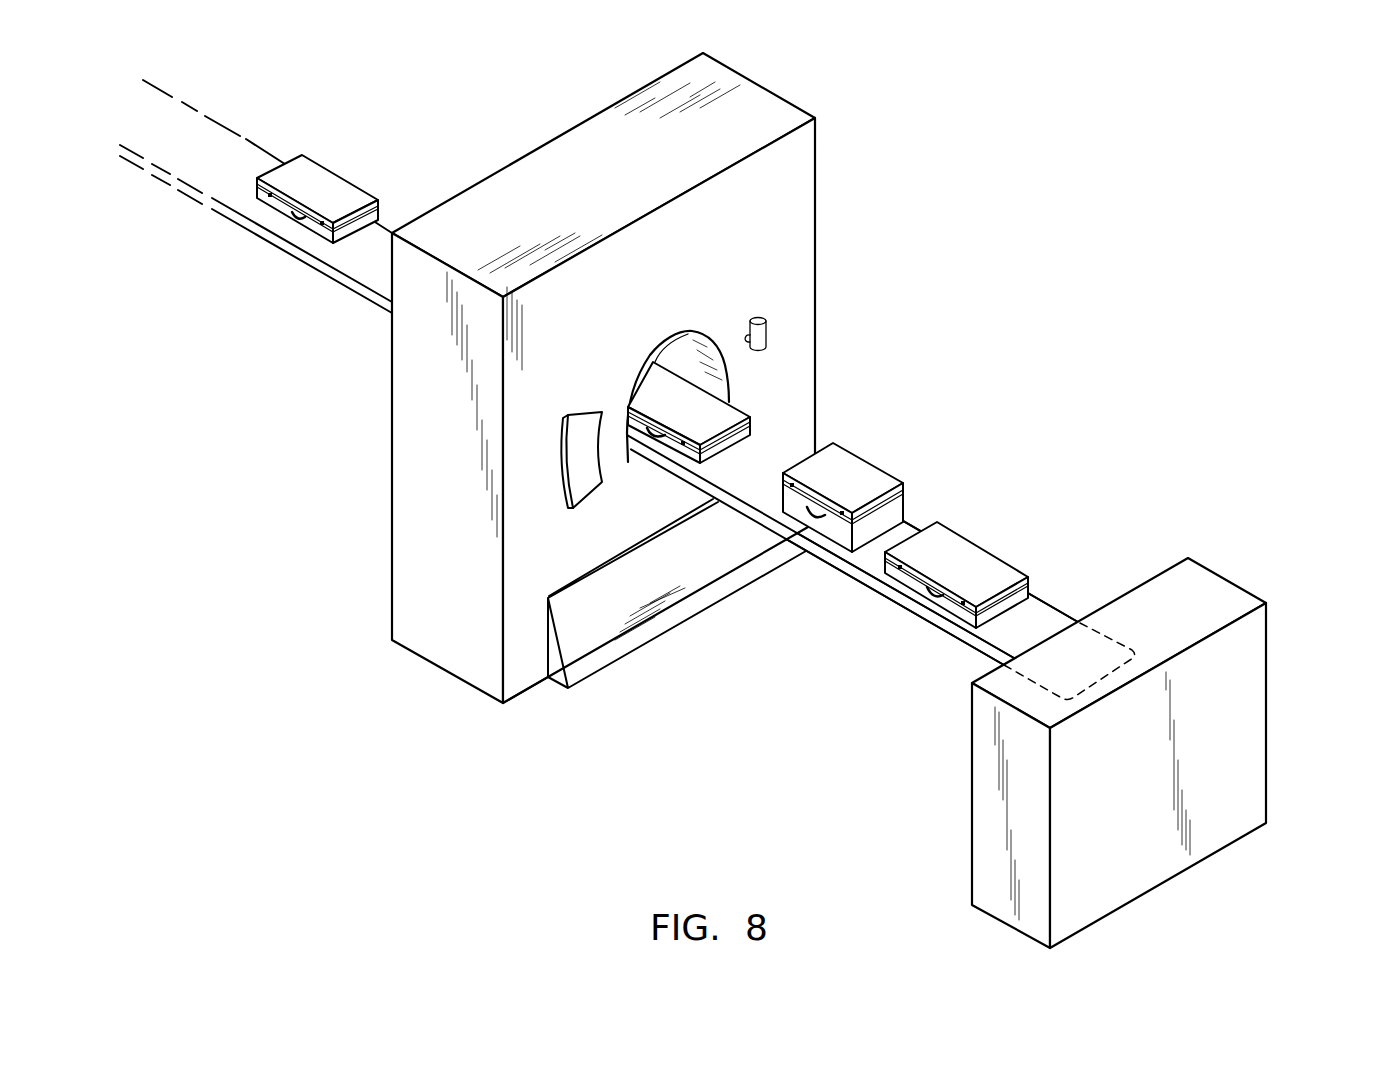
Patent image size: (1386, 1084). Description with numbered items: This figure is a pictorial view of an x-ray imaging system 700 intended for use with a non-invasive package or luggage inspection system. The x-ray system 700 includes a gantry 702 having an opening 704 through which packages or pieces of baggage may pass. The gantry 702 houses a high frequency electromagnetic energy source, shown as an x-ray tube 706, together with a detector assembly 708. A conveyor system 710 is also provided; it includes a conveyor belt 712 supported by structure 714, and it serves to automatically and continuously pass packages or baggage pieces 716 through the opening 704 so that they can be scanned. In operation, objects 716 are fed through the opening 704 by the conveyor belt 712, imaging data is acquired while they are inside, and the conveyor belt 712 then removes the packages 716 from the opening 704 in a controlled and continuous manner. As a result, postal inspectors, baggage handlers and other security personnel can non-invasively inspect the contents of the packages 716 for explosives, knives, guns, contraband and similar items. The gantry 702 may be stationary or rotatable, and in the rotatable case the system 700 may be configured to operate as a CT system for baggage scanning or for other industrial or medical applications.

The x-ray imaging system 700 is at (731, 500).
The gantry 702 is at (706, 275).
The opening 704 is at (707, 328).
The x-ray tube 706 is at (770, 338).
The detector assembly 708 is at (590, 425).
The conveyor system 710 is at (140, 191).
The conveyor belt 712 is at (362, 263).
The structure 714 is at (1250, 705).
The packages or baggage pieces 716 is at (330, 183).